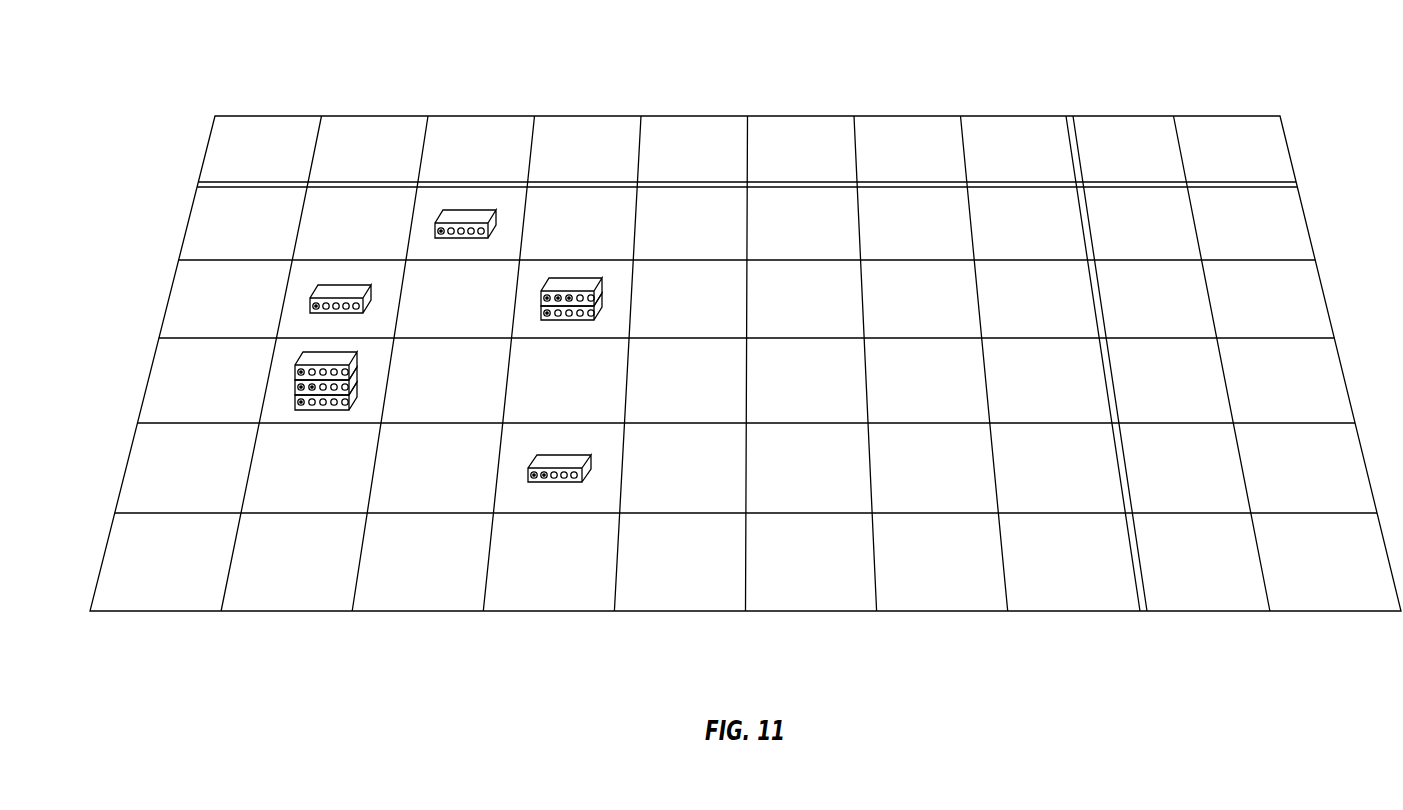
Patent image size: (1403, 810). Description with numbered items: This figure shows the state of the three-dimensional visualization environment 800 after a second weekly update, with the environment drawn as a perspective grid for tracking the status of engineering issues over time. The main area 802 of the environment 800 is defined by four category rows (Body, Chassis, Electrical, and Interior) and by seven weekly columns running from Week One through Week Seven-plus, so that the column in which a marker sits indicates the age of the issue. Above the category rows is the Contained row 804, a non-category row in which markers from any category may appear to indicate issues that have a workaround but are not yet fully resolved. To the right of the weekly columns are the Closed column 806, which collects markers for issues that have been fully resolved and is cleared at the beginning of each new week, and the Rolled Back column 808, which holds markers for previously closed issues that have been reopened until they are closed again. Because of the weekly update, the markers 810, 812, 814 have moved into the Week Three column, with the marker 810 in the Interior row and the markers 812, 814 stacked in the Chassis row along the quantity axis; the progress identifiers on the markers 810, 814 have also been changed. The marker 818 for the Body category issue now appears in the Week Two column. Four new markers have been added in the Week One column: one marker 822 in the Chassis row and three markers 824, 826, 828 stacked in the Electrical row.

The environment 800 is at (376, 40).
The main area 802 is at (786, 233).
The Contained row 804 is at (208, 153).
The Closed column 806 is at (1209, 613).
The Rolled Back column 808 is at (1340, 613).
The marker 810 is at (563, 453).
The marker 812 is at (598, 300).
The marker 814 is at (578, 276).
The marker 818 is at (470, 208).
The marker 822 is at (347, 283).
The marker 824 is at (322, 412).
The marker 826 is at (358, 374).
The marker 828 is at (358, 362).